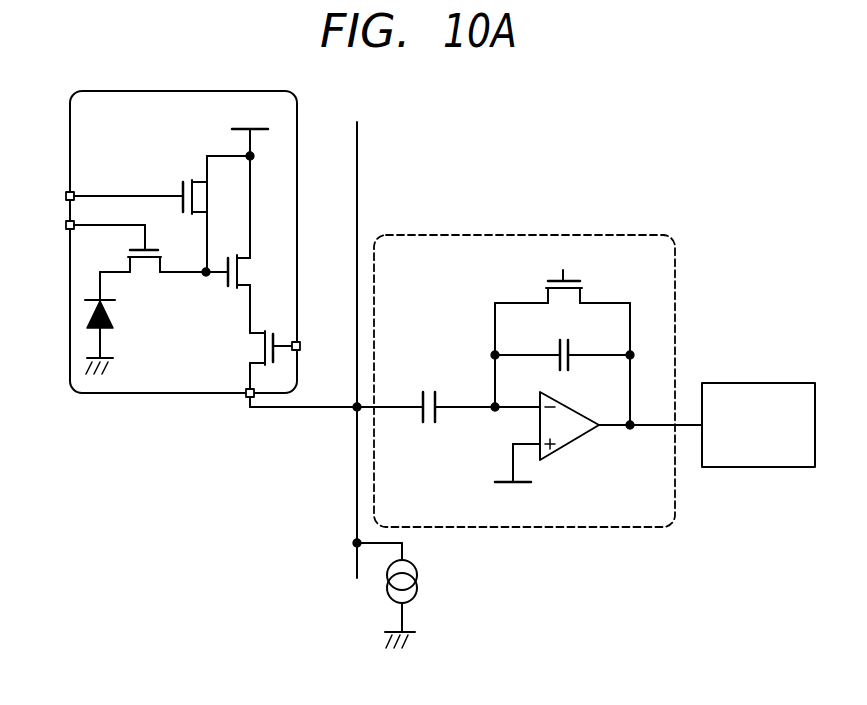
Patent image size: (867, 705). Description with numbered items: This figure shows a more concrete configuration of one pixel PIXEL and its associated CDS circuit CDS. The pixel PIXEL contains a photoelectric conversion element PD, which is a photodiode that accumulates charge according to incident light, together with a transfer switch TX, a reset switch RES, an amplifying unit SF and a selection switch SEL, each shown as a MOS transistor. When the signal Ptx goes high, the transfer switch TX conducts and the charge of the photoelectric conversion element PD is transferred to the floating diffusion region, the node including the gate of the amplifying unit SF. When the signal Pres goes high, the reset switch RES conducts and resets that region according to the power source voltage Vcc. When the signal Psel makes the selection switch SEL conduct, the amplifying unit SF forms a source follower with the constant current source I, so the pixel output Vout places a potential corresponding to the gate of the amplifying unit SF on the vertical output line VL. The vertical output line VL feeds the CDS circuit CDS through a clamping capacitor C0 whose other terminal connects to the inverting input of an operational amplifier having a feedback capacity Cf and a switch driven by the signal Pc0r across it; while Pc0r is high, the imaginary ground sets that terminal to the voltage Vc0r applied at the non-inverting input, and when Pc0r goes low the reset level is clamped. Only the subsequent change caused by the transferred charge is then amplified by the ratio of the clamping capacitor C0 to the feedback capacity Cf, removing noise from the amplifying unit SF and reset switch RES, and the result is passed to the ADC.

The pixel PIXEL is at (183, 242).
The power source voltage Vcc is at (250, 179).
The reset switch RES is at (201, 214).
The signal Pres is at (100, 196).
The signal Ptx is at (87, 231).
The transfer switch TX is at (164, 276).
The photoelectric conversion element PD is at (116, 323).
The amplifying unit SF is at (232, 294).
The selection switch SEL is at (238, 369).
The signal Psel is at (309, 349).
The pixel output Vout is at (326, 413).
The vertical output line VL is at (356, 338).
The constant current source I is at (392, 593).
The CDS circuit CDS is at (524, 381).
The clamping capacitor C0 is at (478, 393).
The signal Pc0r is at (562, 335).
The feedback capacity Cf is at (562, 343).
The voltage Vc0r is at (515, 479).
The element ADC is at (758, 425).